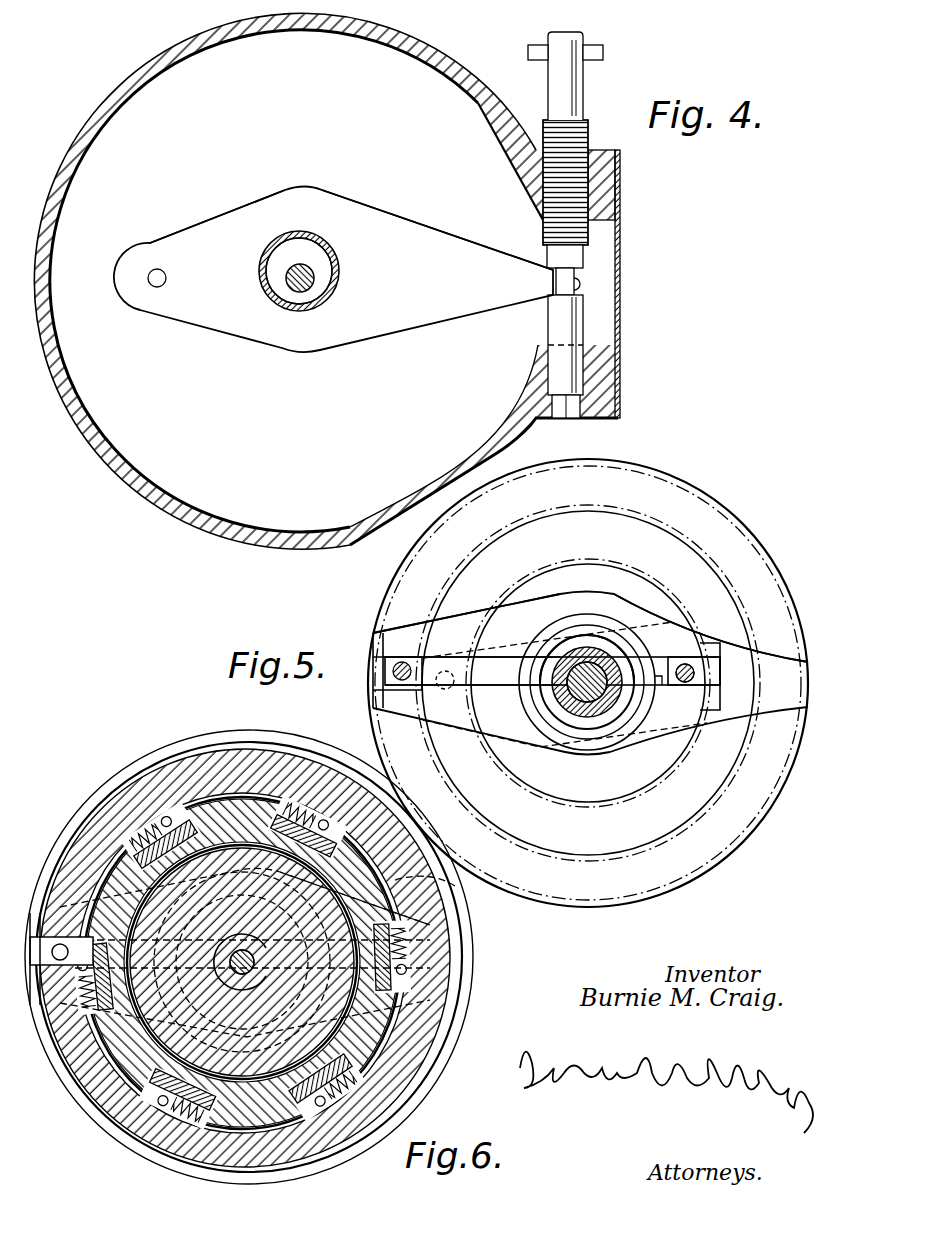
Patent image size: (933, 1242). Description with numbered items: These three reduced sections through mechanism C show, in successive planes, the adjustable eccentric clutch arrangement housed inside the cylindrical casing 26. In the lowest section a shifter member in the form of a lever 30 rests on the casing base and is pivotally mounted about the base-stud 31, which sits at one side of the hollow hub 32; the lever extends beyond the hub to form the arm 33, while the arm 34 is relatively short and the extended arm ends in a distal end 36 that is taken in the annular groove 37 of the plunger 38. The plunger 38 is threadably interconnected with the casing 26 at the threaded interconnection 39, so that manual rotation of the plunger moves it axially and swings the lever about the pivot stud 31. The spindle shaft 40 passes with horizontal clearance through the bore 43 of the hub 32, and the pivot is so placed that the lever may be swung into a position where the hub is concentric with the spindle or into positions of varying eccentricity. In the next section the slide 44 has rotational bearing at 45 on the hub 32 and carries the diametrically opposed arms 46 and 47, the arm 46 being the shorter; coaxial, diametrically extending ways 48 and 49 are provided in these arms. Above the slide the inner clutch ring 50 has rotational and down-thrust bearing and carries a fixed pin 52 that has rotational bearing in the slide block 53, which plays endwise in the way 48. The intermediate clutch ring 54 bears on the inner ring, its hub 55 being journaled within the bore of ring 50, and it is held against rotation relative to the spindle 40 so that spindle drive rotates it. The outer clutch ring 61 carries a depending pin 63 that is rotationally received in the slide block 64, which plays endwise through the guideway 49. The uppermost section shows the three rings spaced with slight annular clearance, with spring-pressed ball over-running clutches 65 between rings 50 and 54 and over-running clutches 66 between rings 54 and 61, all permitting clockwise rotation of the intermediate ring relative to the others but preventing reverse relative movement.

In FIG. 4, the cylindrical casing 26 is at (450, 60).
In FIG. 4, the lever 30 is at (377, 206).
In FIG. 5, the lever 30 is at (530, 610).
In FIG. 4, the base-stud 31 is at (157, 269).
In FIG. 5, the base-stud 31 is at (445, 692).
In FIG. 4, the hollow hub 32 is at (291, 231).
In FIG. 4, the arm 33 is at (437, 250).
In FIG. 5, the arm 33 is at (762, 668).
In FIG. 6, the arm 33 is at (445, 969).
In FIG. 4, the arm 34 is at (192, 228).
In FIG. 5, the arm 34 is at (505, 650).
In FIG. 4, the distal end 36 is at (548, 285).
In FIG. 4, the annular groove 37 is at (580, 278).
In FIG. 4, the plunger 38 is at (585, 318).
In FIG. 4, the threaded interconnection 39 is at (600, 186).
In FIG. 4, the spindle shaft 40 is at (300, 290).
In FIG. 5, the spindle shaft 40 is at (586, 692).
In FIG. 6, the spindle shaft 40 is at (228, 976).
In FIG. 4, the bore 43 is at (318, 256).
In FIG. 5, the slide 44 is at (664, 612).
In FIG. 6, the slide 44 is at (75, 915).
In FIG. 5, the rotational bearing 45 is at (560, 708).
In FIG. 5, the arm 46 is at (684, 640).
In FIG. 5, the arm 47 is at (474, 622).
In FIG. 5, the way 48 is at (658, 684).
In FIG. 5, the guideway 49 is at (500, 680).
In FIG. 6, the guideway 49 is at (32, 1006).
In FIG. 5, the inner clutch ring 50 is at (620, 585).
In FIG. 6, the inner clutch ring 50 is at (330, 1025).
In FIG. 5, the fixed pin 52 is at (677, 684).
In FIG. 6, the fixed pin 52 is at (412, 906).
In FIG. 5, the slide block 53 is at (688, 690).
In FIG. 5, the intermediate clutch ring 54 is at (614, 540).
In FIG. 6, the intermediate clutch ring 54 is at (213, 815).
In FIG. 5, the hub 55 is at (601, 700).
In FIG. 6, the hub 55 is at (262, 978).
In FIG. 5, the outer clutch ring 61 is at (597, 483).
In FIG. 6, the outer clutch ring 61 is at (142, 793).
In FIG. 5, the depending pin 63 is at (397, 667).
In FIG. 6, the depending pin 63 is at (60, 944).
In FIG. 5, the slide block 64 is at (388, 658).
In FIG. 6, the over-running clutches 65 is at (318, 808).
In FIG. 6, the over-running clutches 66 is at (163, 818).